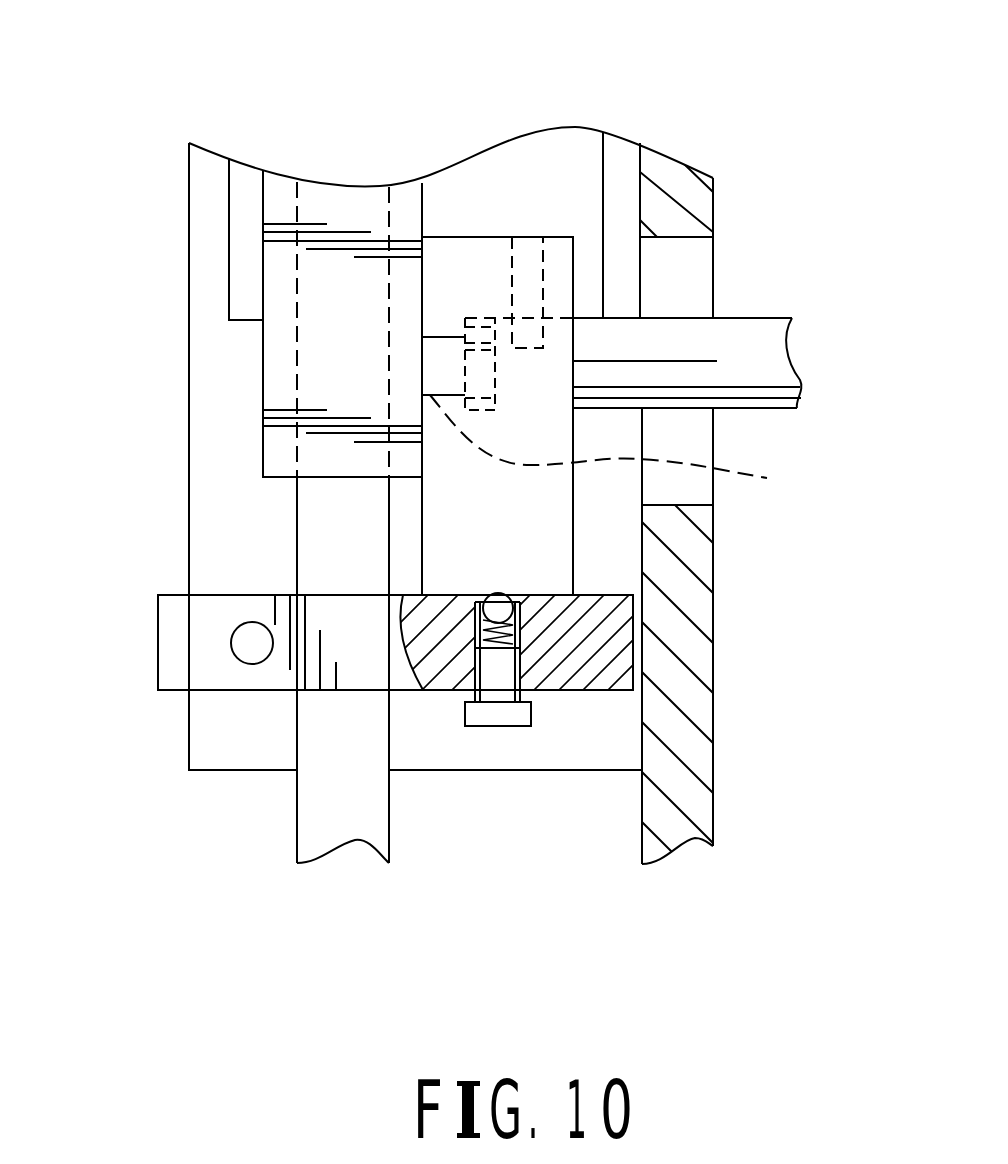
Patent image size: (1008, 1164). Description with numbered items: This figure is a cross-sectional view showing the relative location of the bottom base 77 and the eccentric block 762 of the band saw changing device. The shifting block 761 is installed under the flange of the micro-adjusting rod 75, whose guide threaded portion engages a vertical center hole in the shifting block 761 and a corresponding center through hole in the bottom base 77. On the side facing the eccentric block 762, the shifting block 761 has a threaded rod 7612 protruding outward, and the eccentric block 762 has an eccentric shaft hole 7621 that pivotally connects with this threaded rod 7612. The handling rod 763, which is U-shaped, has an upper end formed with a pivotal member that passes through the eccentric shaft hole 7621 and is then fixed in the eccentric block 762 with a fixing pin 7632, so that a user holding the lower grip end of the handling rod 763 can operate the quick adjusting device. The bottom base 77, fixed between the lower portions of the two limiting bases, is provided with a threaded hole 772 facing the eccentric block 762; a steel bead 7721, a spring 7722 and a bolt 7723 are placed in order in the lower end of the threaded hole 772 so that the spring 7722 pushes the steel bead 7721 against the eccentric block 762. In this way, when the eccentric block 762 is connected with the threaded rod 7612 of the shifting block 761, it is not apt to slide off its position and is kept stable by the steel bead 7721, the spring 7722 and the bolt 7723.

The micro-adjusting rod 75 is at (320, 812).
The shifting block 761 is at (280, 395).
The threaded rod 7612 is at (442, 340).
The eccentric block 762 is at (528, 527).
The eccentric shaft hole 7621 is at (643, 449).
The handling rod 763 is at (751, 333).
The fixing pin 7632 is at (542, 290).
The bottom base 77 is at (237, 607).
The threaded hole 772 is at (656, 734).
The steel bead 7721 is at (498, 608).
The spring 7722 is at (520, 641).
The bolt 7723 is at (498, 693).